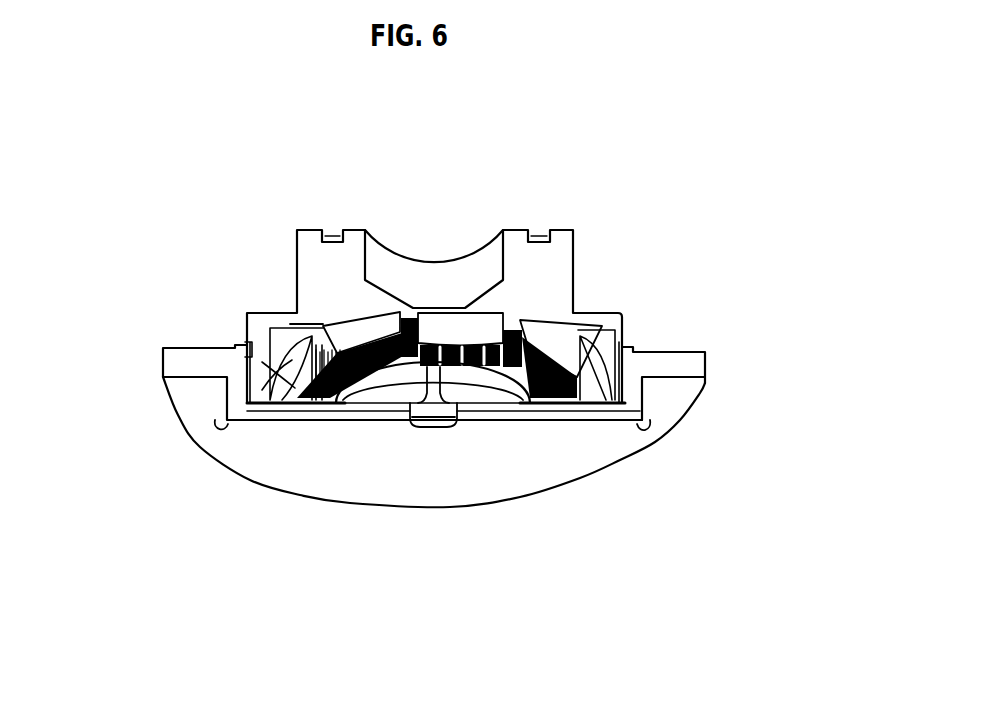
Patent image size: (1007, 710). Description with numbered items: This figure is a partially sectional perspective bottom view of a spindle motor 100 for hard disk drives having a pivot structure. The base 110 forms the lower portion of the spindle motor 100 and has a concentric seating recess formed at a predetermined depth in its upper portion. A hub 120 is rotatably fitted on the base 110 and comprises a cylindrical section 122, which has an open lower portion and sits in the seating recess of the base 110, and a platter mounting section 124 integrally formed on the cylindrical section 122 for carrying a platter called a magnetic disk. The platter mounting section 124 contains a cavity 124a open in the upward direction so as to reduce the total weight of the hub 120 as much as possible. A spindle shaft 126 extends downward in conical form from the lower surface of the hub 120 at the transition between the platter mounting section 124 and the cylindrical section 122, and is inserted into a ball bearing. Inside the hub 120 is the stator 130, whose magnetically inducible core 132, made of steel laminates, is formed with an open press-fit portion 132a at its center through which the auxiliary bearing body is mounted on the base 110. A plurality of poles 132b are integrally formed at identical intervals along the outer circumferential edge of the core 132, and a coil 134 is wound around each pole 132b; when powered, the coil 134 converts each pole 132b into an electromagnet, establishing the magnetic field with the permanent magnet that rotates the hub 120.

The spindle motor 100 is at (335, 213).
The base 110 is at (438, 503).
The hub 120 is at (574, 297).
The cylindrical section 122 is at (652, 357).
The platter mounting section 124 is at (577, 260).
The cavity 124a is at (430, 282).
The spindle shaft 126 is at (480, 390).
The stator 130 is at (368, 348).
The core 132 is at (352, 395).
The open press-fit portion 132a is at (397, 383).
The poles 132b is at (258, 402).
The coil 134 is at (555, 403).